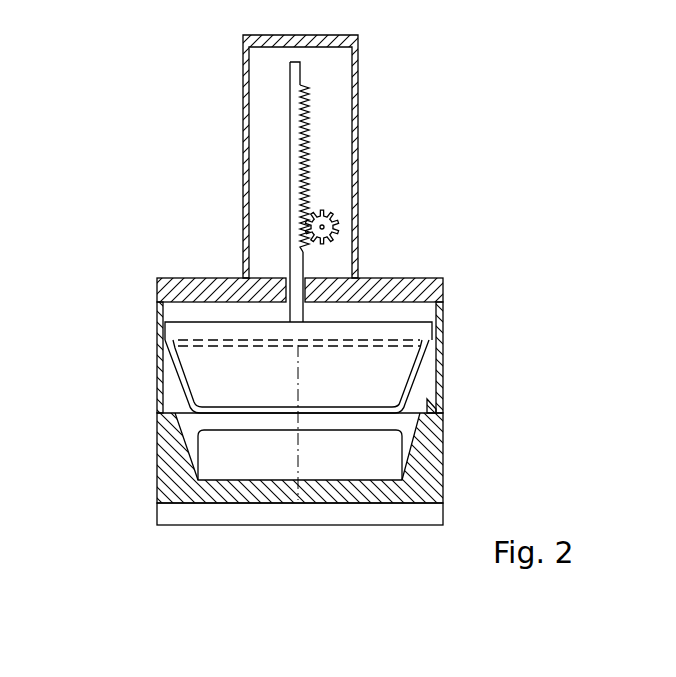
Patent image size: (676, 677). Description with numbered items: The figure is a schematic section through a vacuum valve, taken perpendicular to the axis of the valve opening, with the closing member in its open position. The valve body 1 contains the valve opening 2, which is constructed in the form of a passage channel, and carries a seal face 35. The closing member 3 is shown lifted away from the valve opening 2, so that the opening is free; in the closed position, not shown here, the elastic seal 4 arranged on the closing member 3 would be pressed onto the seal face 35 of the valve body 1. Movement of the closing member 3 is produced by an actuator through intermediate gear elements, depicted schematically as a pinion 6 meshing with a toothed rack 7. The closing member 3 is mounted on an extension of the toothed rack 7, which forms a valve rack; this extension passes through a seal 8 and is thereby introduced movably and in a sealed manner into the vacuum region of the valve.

The valve body 1 is at (170, 447).
The valve opening 2 is at (222, 465).
The closing member 3 is at (177, 377).
The elastic seal 4 is at (192, 395).
The pinion 6 is at (333, 212).
The toothed rack 7 is at (298, 165).
The seal 8 is at (337, 277).
The seal face 35 is at (437, 405).